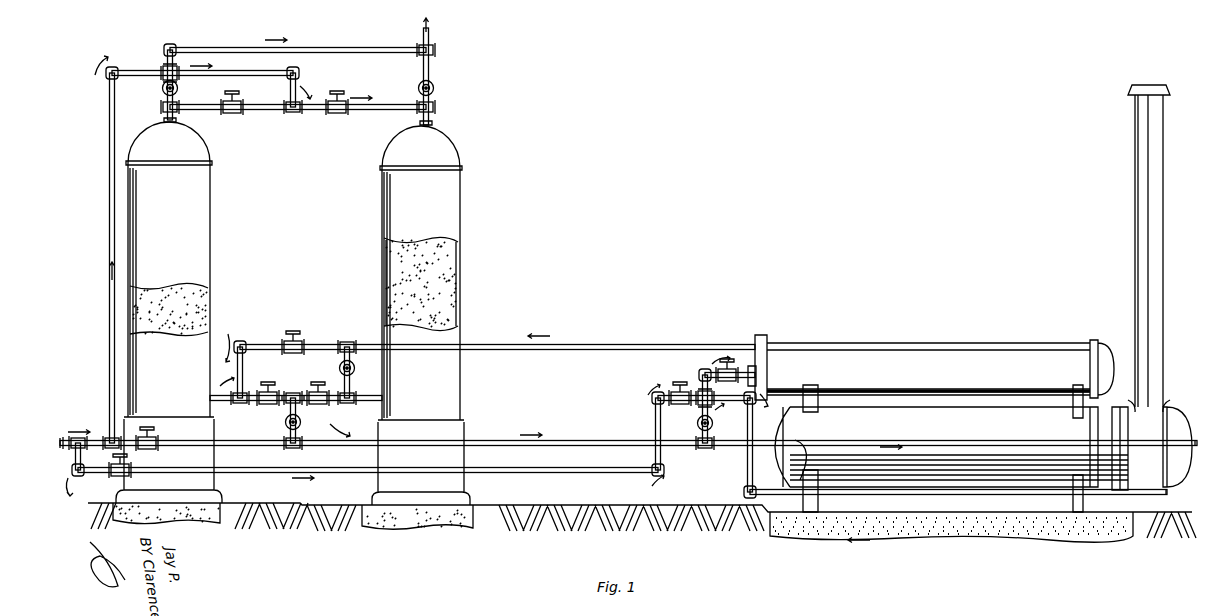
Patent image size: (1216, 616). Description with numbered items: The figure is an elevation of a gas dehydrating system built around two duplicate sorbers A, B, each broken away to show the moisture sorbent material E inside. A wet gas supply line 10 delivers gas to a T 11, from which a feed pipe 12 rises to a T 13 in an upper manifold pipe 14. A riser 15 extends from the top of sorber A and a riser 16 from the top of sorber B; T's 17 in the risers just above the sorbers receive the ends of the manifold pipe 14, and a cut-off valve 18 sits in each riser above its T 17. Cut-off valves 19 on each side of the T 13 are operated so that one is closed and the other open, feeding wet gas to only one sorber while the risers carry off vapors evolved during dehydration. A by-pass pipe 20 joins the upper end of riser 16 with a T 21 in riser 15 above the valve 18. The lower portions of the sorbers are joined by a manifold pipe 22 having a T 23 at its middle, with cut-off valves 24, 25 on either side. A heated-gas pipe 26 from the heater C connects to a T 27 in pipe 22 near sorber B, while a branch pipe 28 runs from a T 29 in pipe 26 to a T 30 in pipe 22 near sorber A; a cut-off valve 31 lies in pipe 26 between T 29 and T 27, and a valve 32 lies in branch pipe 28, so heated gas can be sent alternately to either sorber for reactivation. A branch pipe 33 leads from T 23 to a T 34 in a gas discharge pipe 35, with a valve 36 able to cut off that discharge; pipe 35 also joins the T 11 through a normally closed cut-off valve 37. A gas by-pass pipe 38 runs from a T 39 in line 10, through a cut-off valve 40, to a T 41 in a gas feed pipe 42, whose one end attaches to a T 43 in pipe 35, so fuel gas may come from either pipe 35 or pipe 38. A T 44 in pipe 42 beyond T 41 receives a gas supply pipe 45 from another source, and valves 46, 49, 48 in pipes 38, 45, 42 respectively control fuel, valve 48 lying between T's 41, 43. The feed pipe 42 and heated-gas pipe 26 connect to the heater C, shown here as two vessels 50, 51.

The wet gas supply line 10 is at (64, 440).
The T 11 is at (108, 448).
The feed pipe 12 is at (107, 217).
The T 13 is at (291, 114).
The manifold pipe 14 is at (383, 110).
The riser 15 is at (432, 80).
The riser 16 is at (166, 53).
The T 17 is at (436, 108).
The cut-off valve 18 is at (434, 90).
The cut-off valve 19 is at (333, 114).
The by-pass pipe 20 is at (365, 52).
The T 21 is at (420, 54).
The manifold pipe 22 is at (384, 395).
The T 23 is at (296, 392).
The cut-off valve 24 is at (318, 408).
The cut-off valve 25 is at (264, 387).
The heated-gas pipe 26 is at (514, 347).
The T 27 is at (240, 404).
The branch pipe 28 is at (358, 380).
The T 29 is at (345, 342).
The T 30 is at (349, 404).
The cut-off valve 31 is at (286, 342).
The valve 32 is at (339, 370).
The branch pipe 33 is at (281, 404).
The T 34 is at (288, 448).
The gas discharge pipe 35 is at (502, 440).
The valve 36 is at (285, 424).
The cut-off valve 37 is at (152, 448).
The gas by-pass pipe 38 is at (516, 471).
The T 39 is at (81, 420).
The cut-off valve 40 is at (118, 476).
The T 41 is at (712, 410).
The gas feed pipe 42 is at (740, 370).
The T 43 is at (704, 450).
The T 44 is at (681, 380).
The gas supply pipe 45 is at (1000, 500).
The valve 46 is at (656, 420).
The valve 48 is at (697, 425).
The valve 49 is at (760, 386).
The vessel 50 is at (918, 417).
The vessel 51 is at (944, 348).
The sorber A is at (462, 214).
The sorber B is at (212, 203).
The heater C is at (973, 298).
The moisture sorbent material E is at (378, 267).